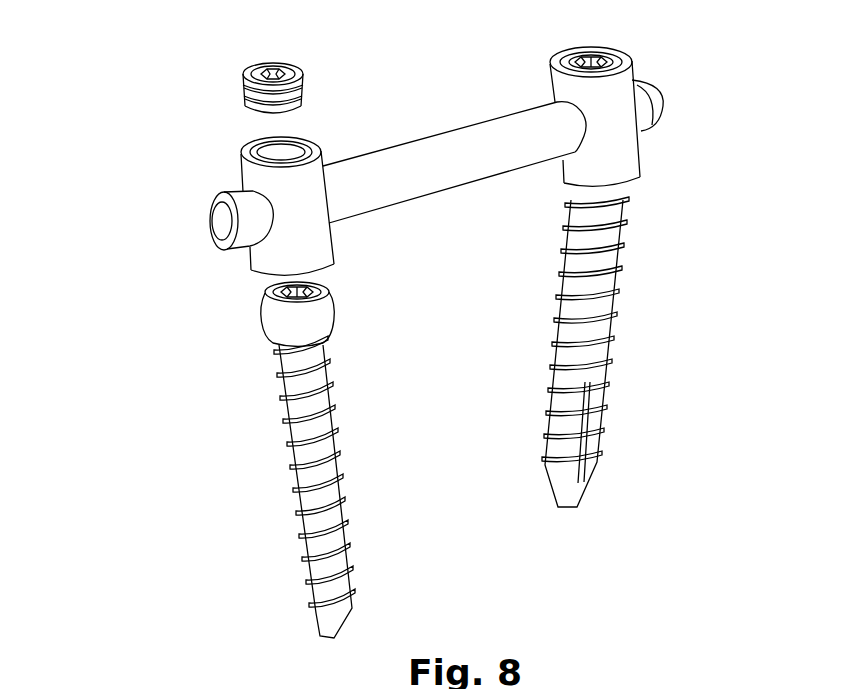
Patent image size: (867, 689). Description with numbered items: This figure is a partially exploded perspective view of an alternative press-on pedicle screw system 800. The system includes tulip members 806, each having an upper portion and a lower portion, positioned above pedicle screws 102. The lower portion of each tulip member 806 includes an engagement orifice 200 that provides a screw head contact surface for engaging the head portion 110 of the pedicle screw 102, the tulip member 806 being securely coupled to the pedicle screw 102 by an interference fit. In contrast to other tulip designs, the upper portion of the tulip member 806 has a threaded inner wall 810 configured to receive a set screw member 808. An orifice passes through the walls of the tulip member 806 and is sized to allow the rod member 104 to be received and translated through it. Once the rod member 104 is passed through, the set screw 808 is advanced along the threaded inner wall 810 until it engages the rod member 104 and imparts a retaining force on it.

The pedicle screw system 800 is at (88, 100).
The set screw member 808 is at (267, 67).
The threaded inner wall 810 is at (267, 140).
The tulip member 806 is at (243, 163).
The rod member 104 is at (402, 148).
The engagement orifice 200 is at (250, 290).
The head portion 110 is at (330, 288).
The pedicle screw 102 is at (380, 487).